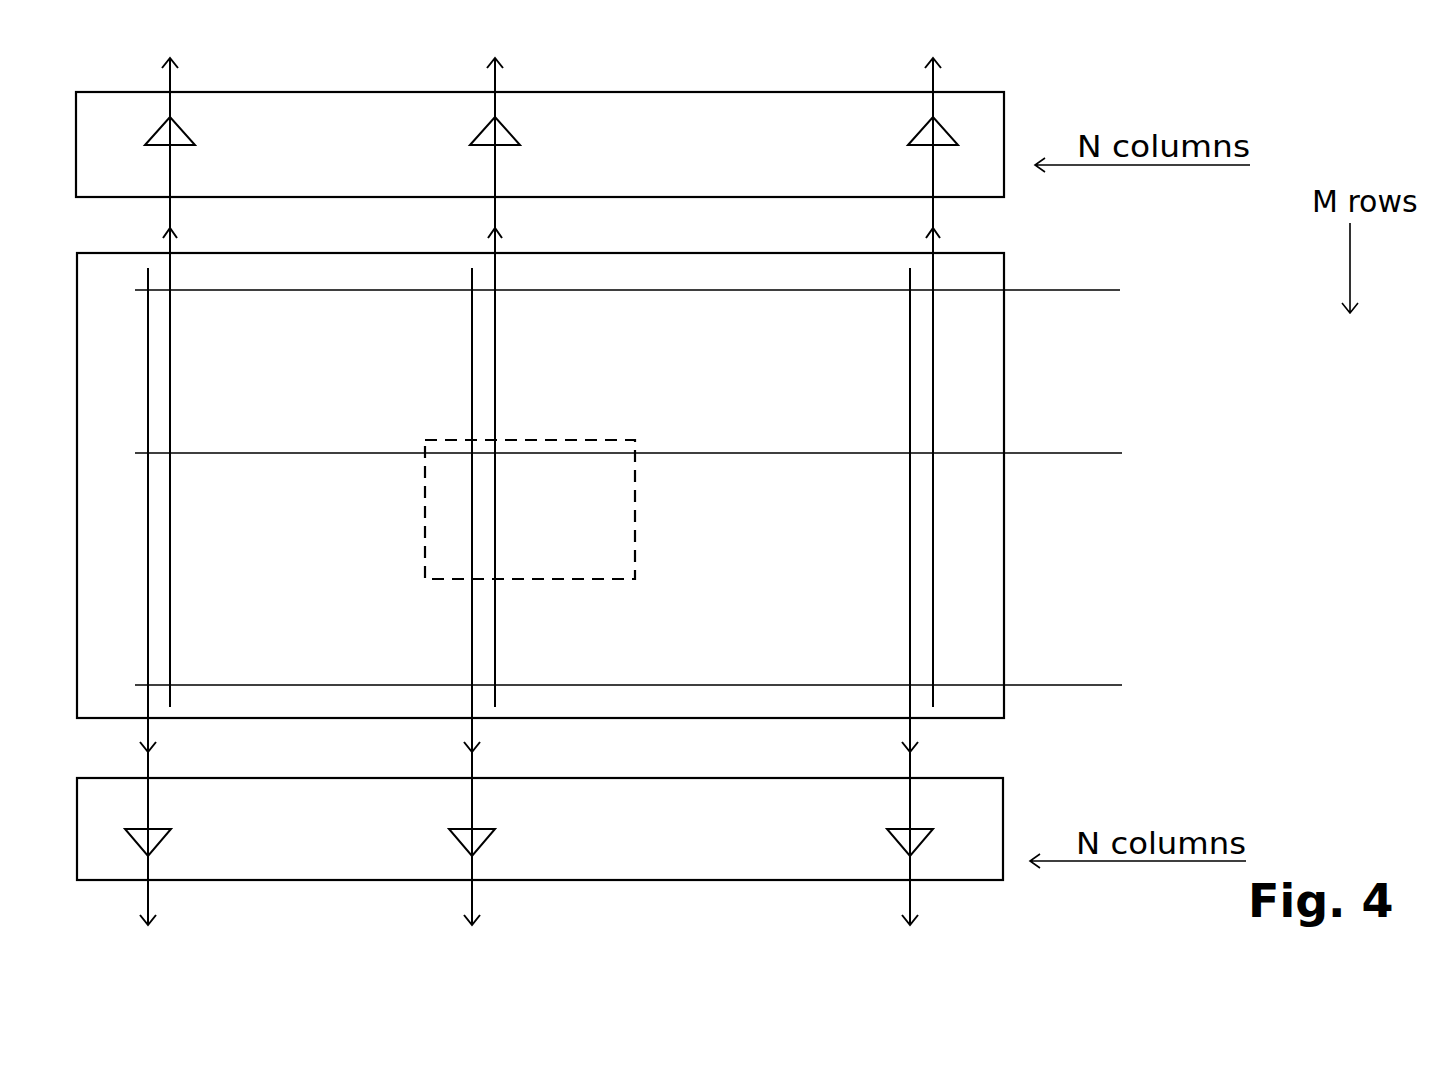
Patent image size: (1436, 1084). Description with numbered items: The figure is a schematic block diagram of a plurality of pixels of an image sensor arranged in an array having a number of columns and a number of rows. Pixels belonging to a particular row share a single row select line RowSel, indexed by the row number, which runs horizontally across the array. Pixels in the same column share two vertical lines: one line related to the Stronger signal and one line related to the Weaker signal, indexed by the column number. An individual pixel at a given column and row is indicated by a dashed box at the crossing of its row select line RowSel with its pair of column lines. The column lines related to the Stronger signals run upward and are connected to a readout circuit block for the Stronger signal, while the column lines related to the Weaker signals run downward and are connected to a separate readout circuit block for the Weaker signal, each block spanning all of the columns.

The row select line RowSel is at (726, 471).